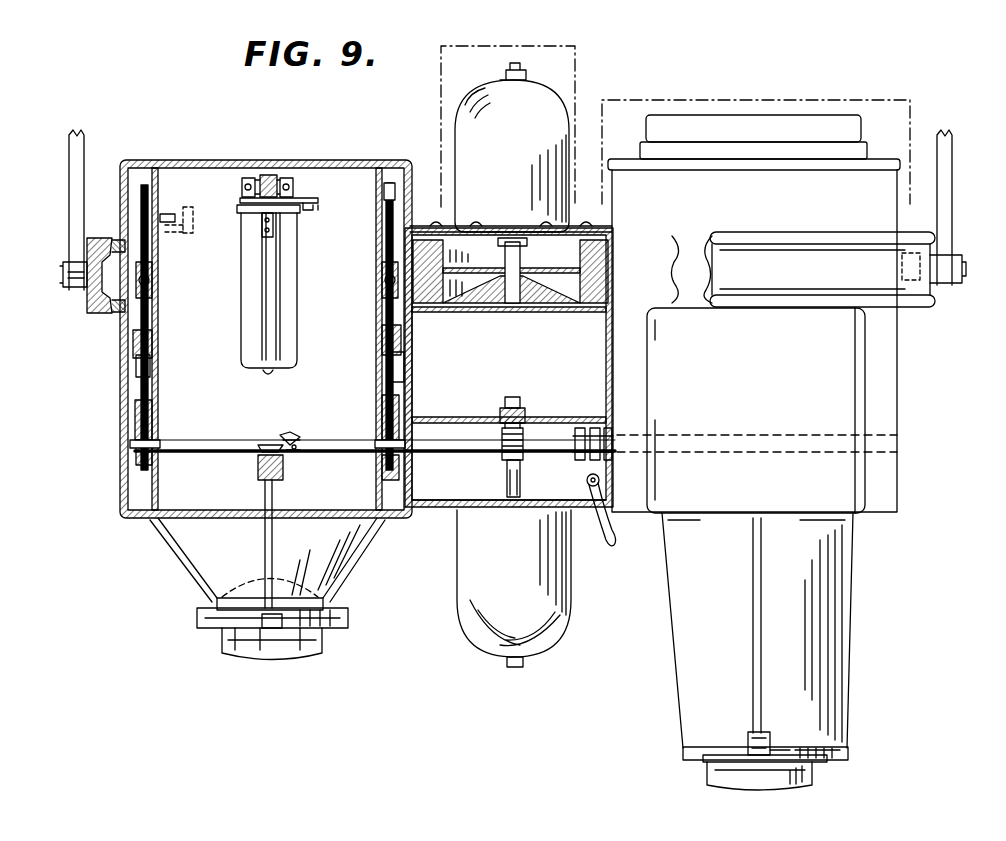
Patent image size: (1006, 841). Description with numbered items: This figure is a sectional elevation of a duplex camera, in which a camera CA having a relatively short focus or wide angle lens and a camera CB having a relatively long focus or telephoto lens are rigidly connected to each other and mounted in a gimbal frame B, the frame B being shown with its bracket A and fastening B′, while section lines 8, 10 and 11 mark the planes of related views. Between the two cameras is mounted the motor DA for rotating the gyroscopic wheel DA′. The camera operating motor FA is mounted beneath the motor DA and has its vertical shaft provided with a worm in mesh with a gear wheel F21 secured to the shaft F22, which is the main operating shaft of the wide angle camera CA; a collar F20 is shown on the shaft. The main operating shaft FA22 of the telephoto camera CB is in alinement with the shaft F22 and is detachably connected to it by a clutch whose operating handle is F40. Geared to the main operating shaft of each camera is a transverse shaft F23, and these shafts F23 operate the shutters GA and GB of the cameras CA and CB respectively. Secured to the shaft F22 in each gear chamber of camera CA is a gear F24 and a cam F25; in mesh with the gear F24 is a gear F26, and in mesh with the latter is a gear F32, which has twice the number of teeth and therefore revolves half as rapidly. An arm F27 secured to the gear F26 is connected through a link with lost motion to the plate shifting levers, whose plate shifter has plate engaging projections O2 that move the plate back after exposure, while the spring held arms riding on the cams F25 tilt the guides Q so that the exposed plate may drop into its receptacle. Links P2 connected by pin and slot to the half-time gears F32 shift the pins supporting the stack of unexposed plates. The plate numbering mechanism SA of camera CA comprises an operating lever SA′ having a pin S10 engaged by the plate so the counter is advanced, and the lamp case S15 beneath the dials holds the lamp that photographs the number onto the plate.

The supporting bracket A is at (71, 170).
The section line 8 is at (47, 208).
The section line 10 is at (131, 95).
The section line 11 is at (758, 797).
The gimbal frame B is at (97, 297).
The bolt B′ is at (68, 270).
The camera CA is at (266, 385).
The shutter GA is at (208, 607).
The shutter GB is at (688, 753).
The lamp case S15 is at (268, 289).
The plate numbering mechanism SA is at (280, 175).
The operating lever SA′ is at (306, 198).
The pin S10 is at (316, 212).
The plate engaging projections O2 is at (195, 230).
The guides Q is at (165, 232).
The links P2 is at (160, 283).
The gear F32 is at (152, 308).
The gear F26 is at (150, 340).
The arm F27 is at (137, 352).
The cam F25 is at (153, 420).
The gear F24 is at (143, 420).
The shaft F22 is at (454, 454).
The transverse shaft F23 is at (267, 545).
The gear wheel F21 is at (513, 397).
The collar F20 is at (525, 460).
The operating handle F40 is at (613, 536).
The motor DA is at (511, 147).
The gyroscopic wheel DA′ is at (603, 250).
The camera operating motor FA is at (514, 588).
The main operating shaft FA22 is at (676, 455).
The camera CB is at (756, 410).